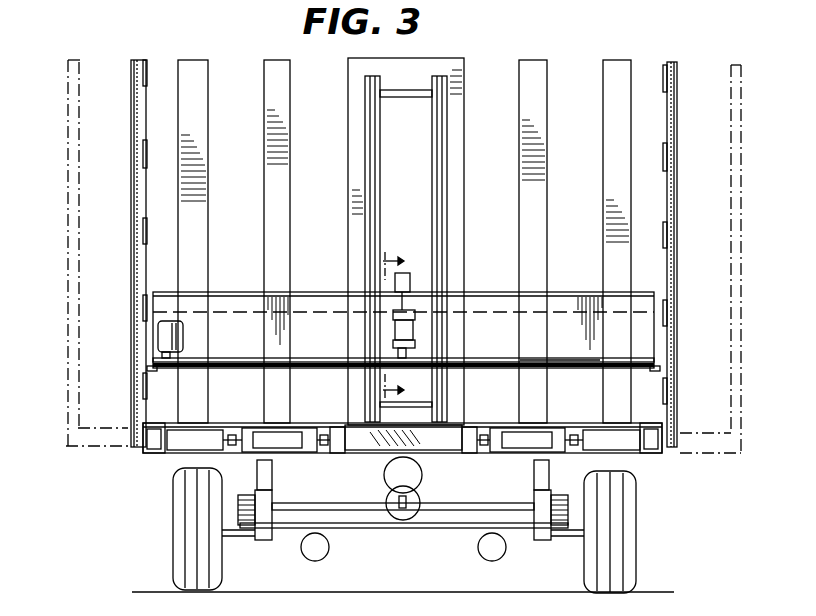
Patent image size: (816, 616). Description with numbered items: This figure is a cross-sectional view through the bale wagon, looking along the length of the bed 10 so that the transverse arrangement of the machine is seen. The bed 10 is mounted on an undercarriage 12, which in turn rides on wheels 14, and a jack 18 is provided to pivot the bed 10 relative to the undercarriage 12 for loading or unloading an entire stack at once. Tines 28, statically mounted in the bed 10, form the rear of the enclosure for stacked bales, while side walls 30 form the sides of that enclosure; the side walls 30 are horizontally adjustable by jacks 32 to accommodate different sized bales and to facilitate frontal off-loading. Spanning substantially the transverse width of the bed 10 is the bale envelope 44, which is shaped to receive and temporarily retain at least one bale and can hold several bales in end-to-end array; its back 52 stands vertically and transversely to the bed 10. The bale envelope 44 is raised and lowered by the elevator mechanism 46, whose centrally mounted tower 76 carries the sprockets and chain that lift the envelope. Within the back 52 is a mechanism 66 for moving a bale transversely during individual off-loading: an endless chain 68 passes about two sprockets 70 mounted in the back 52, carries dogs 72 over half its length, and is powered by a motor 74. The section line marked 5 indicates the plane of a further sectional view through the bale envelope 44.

The section line 5- 5 is at (402, 326).
The bed 10 is at (250, 455).
The undercarriage 12 is at (528, 495).
The wheels 14 is at (616, 526).
The jack 18 is at (420, 476).
The tines 28 is at (266, 158).
The side walls 30 is at (666, 84).
The jacks 32 is at (280, 428).
The bale envelope 44 is at (403, 309).
The elevator mechanism 46 is at (464, 66).
The back 52 is at (518, 341).
The mechanism for moving a bale transversely 66 is at (278, 356).
The endless chain 68 is at (262, 360).
The sprockets 70 is at (156, 374).
The dogs 72 is at (545, 358).
The motor 74 is at (184, 332).
The tower 76 is at (465, 157).